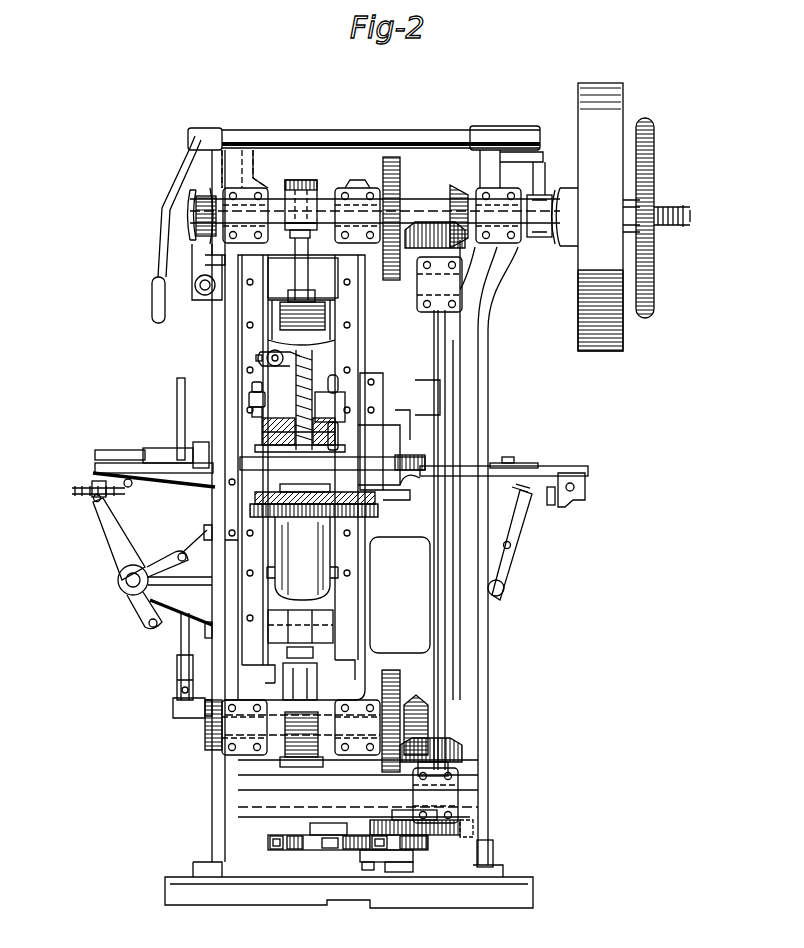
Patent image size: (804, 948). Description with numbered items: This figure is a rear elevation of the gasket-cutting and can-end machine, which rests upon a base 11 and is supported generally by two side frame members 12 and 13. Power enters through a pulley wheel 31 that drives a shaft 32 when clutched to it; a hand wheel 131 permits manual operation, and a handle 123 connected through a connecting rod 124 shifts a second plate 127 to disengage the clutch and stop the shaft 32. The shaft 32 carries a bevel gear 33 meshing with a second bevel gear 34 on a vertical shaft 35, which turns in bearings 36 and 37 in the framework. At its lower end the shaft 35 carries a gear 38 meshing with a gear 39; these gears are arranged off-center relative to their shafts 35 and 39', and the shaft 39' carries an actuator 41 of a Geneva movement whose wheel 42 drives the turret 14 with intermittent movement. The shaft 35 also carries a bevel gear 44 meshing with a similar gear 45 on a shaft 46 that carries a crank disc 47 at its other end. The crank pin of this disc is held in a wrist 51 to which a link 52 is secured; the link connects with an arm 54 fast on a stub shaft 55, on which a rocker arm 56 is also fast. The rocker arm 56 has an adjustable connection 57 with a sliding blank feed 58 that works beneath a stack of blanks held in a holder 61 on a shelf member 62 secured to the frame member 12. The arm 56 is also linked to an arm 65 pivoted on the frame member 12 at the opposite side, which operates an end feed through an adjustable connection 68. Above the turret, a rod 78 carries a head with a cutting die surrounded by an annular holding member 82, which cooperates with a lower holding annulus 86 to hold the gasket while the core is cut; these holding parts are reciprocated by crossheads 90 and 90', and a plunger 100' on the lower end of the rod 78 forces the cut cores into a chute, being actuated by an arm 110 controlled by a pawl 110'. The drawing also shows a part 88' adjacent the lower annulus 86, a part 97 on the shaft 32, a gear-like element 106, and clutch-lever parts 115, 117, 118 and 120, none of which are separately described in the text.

The base 11 is at (258, 892).
The side frame member 12 is at (486, 726).
The side frame member 13 is at (213, 810).
The turret 14 is at (400, 466).
The pulley wheel 31 is at (612, 102).
The shaft 32 is at (688, 216).
The bevel gear 33 is at (456, 195).
The second bevel gear 34 is at (435, 228).
The vertical shaft 35 is at (433, 358).
The bearing 36 is at (462, 290).
The bearing 37 is at (440, 798).
The gear 38 is at (458, 838).
The gear 39 is at (394, 811).
The shaft 39' is at (384, 790).
The actuator of Geneva movement 41 is at (380, 856).
The wheel of Geneva movement 42 is at (300, 845).
The bevel gear 44 is at (460, 753).
The bevel gear 45 is at (420, 715).
The shaft 46 is at (408, 712).
The crank disc 47 is at (205, 745).
The wrist 51 is at (183, 714).
The link 52 is at (178, 645).
The arm 54 is at (152, 562).
The stub shaft 55 is at (118, 582).
The rocker arm 56 is at (112, 541).
The adjustable connection 57 is at (105, 492).
The sliding blank feed 58 is at (130, 455).
The holder 61 is at (178, 395).
The shelf member 62 is at (177, 475).
The arm 65 is at (512, 555).
The adjustable connection 68 is at (548, 500).
The rod 78 is at (248, 395).
The annular holding member 82 is at (262, 427).
The lower holding annulus 86 is at (275, 494).
The gear flange 88' is at (323, 514).
The crosshead 90 is at (303, 240).
The crosshead 90' is at (287, 758).
The bearing 97 is at (378, 182).
The plunger 100' is at (336, 585).
The gear 106 is at (390, 672).
The arm 110 is at (355, 383).
The pawl 110' is at (236, 348).
The lever 115 is at (200, 262).
The clutch 117 is at (196, 212).
The clutch fork 118 is at (192, 198).
The pin 120 is at (250, 398).
The handle 123 is at (160, 246).
The connecting rod 124 is at (354, 145).
The second plate 127 is at (545, 238).
The hand wheel 131 is at (652, 155).